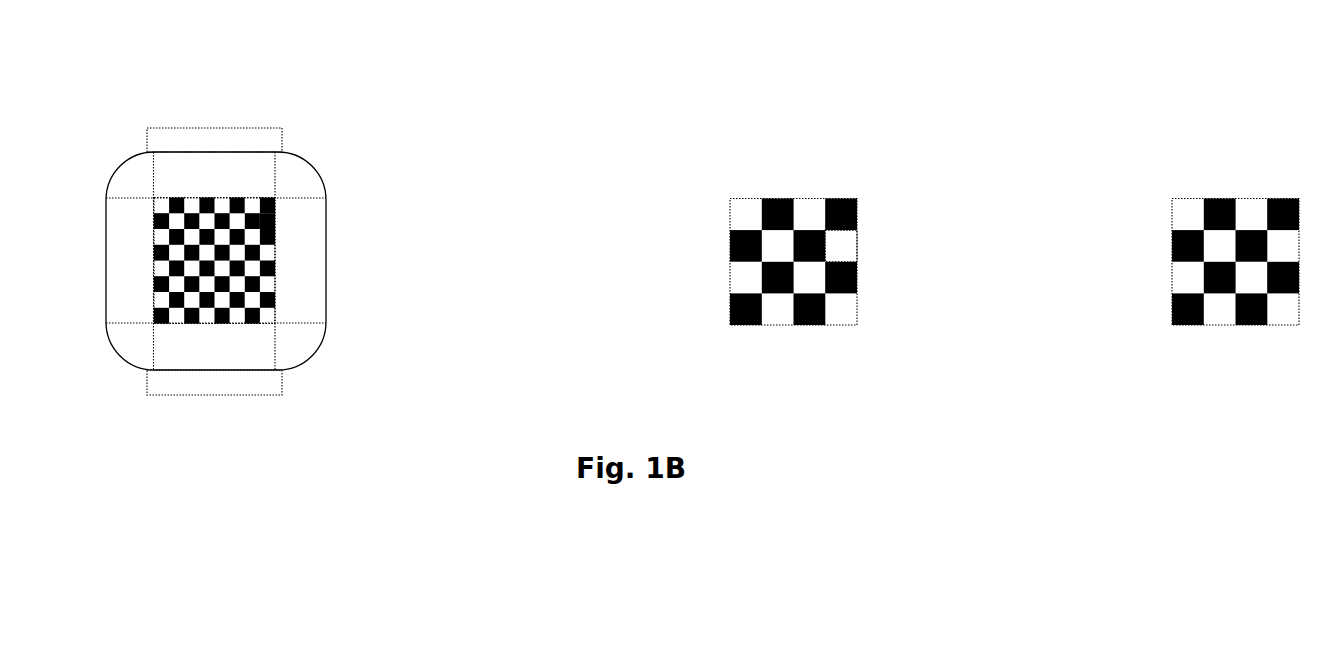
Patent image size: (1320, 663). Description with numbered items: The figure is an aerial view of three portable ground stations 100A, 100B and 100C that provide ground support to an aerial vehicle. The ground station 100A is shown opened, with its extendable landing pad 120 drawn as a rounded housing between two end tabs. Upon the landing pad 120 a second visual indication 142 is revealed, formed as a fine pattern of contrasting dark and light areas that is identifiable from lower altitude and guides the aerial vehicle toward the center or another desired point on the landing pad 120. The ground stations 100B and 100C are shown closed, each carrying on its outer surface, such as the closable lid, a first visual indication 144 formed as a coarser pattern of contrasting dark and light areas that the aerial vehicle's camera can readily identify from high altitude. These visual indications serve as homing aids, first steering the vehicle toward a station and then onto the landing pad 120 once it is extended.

The portable ground station 100A is at (279, 228).
The portable ground station 100B is at (778, 264).
The portable ground station 100C is at (1172, 277).
The landing pad 120 is at (312, 338).
The second visual indication 142 is at (270, 222).
The first visual indication 144 is at (835, 242).